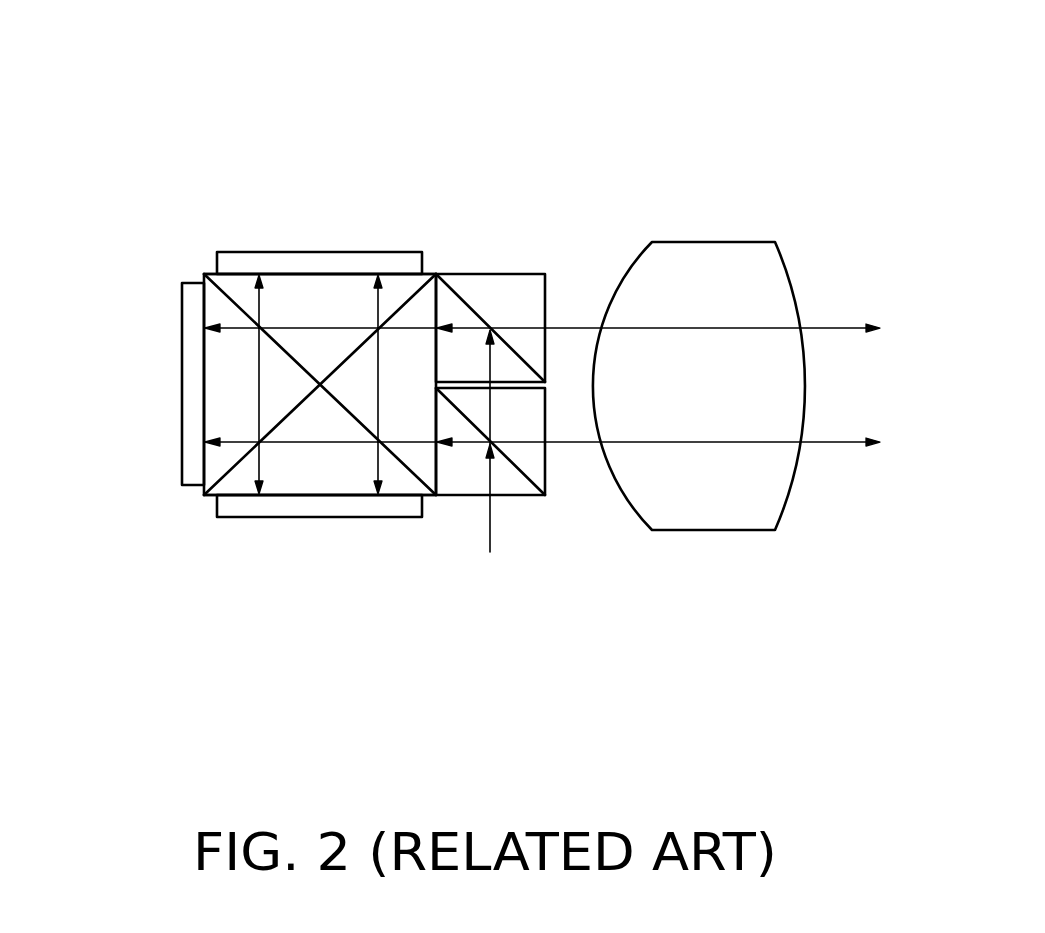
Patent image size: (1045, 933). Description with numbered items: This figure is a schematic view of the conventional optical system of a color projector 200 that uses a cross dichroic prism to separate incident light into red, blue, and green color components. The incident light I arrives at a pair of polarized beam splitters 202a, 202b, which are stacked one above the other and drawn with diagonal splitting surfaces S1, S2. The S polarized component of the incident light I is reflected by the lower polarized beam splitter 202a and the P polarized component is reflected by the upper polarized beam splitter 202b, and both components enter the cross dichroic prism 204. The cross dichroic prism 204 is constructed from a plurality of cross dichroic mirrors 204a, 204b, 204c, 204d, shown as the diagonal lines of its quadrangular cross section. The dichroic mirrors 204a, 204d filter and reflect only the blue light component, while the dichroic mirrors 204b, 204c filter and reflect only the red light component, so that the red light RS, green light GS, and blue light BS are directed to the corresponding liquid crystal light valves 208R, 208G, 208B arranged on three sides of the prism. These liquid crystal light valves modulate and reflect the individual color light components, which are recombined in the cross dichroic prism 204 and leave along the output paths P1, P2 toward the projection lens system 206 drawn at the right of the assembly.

The color projector 200 is at (594, 113).
The cross dichroic prism 204 is at (201, 265).
The cross dichroic mirror 204a is at (410, 274).
The cross dichroic mirror 204b is at (230, 300).
The cross dichroic mirror 204c is at (402, 495).
The cross dichroic mirror 204d is at (230, 466).
The liquid crystal light valve 208R is at (228, 252).
The liquid crystal light valve 208G is at (182, 343).
The liquid crystal light valve 208B is at (233, 517).
The red light RS is at (375, 303).
The green light GS is at (230, 352).
The blue light BS is at (373, 465).
The polarized beam splitter 202a is at (547, 488).
The polarized beam splitter 202b is at (470, 302).
The polarizing surface of lower prism S1 is at (452, 445).
The polarizing surface of upper prism S2 is at (492, 407).
The incident light I is at (488, 463).
The projection lens system 206 is at (733, 242).
The first projected beam P1 is at (597, 440).
The second projected beam P2 is at (597, 327).